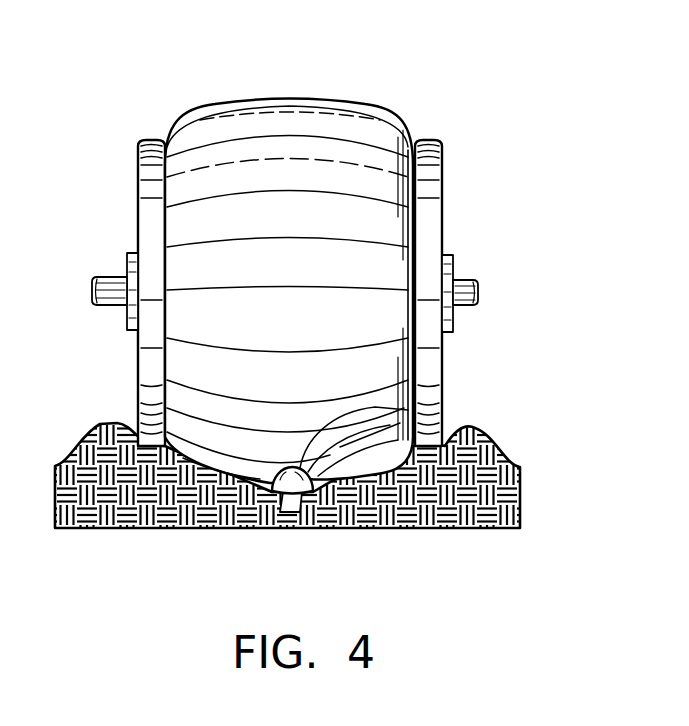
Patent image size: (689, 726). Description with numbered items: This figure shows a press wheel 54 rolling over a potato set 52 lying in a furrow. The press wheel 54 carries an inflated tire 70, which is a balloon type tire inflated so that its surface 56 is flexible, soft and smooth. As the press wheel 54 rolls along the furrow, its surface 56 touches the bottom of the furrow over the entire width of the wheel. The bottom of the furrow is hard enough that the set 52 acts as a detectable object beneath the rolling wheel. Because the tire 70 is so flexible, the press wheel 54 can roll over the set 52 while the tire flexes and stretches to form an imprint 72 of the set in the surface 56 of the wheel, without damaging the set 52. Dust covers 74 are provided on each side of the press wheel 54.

The set 52 is at (297, 510).
The press wheel 54 is at (321, 297).
The surface of the press wheel 56 is at (262, 98).
The inflated tire 70 is at (312, 279).
The imprint 72 is at (293, 468).
The dust covers 74 is at (445, 187).